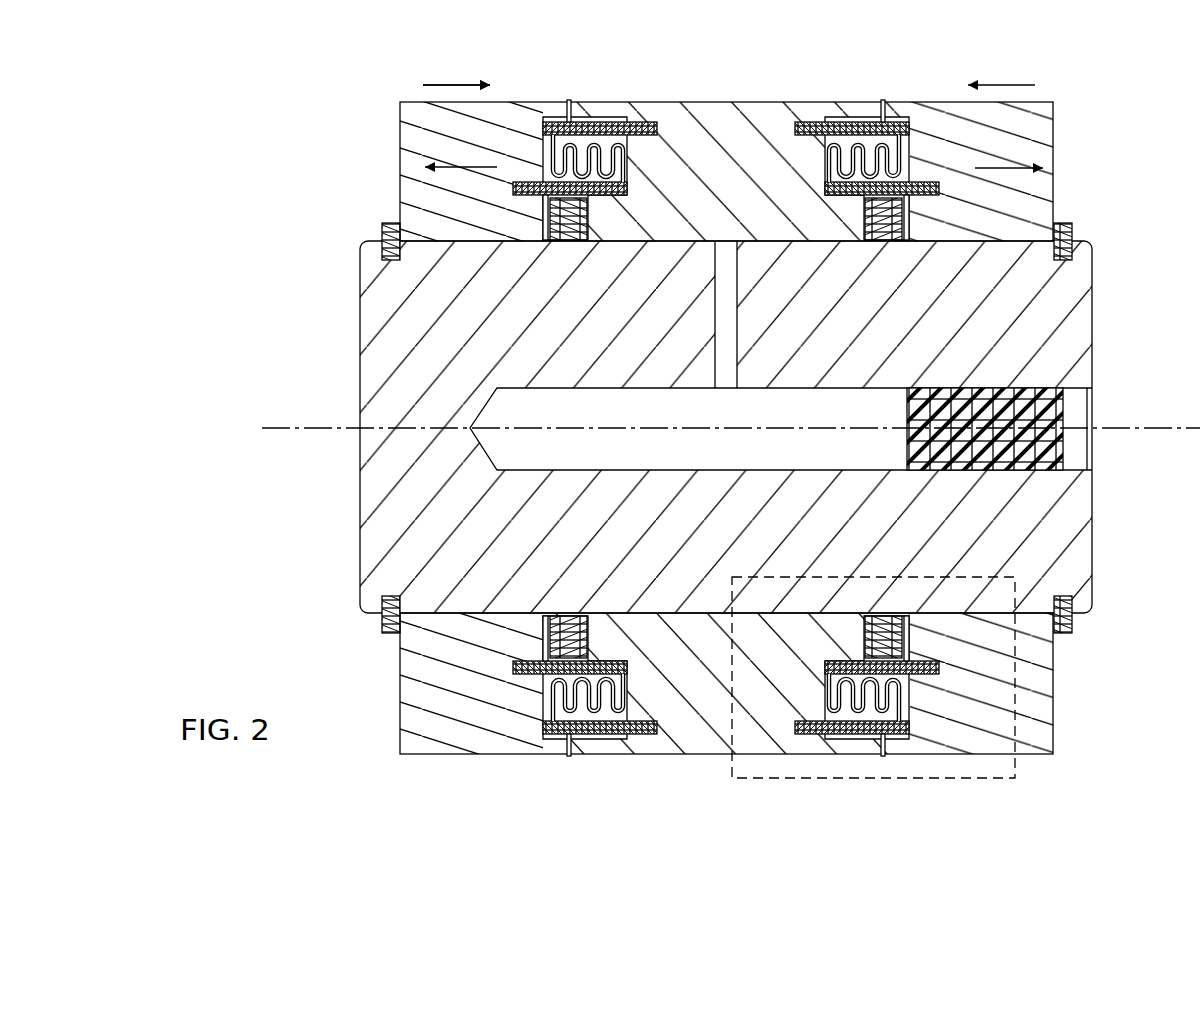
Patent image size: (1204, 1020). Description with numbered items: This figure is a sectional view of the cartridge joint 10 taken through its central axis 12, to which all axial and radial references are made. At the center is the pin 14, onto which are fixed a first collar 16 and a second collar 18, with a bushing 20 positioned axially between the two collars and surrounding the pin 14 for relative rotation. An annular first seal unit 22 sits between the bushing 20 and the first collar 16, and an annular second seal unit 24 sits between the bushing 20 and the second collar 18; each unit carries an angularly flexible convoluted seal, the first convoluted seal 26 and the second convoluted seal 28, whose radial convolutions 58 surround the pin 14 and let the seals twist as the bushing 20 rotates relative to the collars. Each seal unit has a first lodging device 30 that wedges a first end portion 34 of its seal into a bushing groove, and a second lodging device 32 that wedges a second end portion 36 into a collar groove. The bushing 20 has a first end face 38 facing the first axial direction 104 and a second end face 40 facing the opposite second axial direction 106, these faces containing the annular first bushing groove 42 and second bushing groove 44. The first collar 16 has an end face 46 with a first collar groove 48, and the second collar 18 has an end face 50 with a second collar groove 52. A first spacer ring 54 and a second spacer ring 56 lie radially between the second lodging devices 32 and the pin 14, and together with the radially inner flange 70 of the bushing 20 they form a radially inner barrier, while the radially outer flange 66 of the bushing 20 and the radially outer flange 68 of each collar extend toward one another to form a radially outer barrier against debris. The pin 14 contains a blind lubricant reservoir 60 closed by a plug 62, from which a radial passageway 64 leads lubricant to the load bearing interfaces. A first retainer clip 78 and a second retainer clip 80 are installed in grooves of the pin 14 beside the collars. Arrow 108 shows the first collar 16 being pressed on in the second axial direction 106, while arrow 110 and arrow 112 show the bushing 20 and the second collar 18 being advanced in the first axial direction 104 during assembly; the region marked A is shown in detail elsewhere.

The cartridge joint 10 is at (290, 79).
The central axis 12 is at (272, 432).
The pin 14 is at (372, 543).
The first collar 16 is at (1050, 146).
The second collar 18 is at (408, 148).
The bushing 20 is at (702, 140).
The first seal unit 22 is at (948, 720).
The second seal unit 24 is at (503, 720).
The first convoluted seal 26 is at (909, 142).
The second convoluted seal 28 is at (543, 142).
The first lodging device 30 is at (613, 756).
The second lodging device 32 is at (605, 658).
The first end portion 34 is at (678, 756).
The second end portion 36 is at (480, 615).
The first end face 38 is at (812, 148).
The second end face 40 is at (640, 148).
The first bushing groove 42 is at (827, 712).
The second bushing groove 44 is at (626, 712).
The end face 46 is at (905, 238).
The first collar groove 48 is at (935, 195).
The end face 50 is at (552, 235).
The second collar groove 52 is at (540, 190).
The first spacer ring 54 is at (882, 225).
The second spacer ring 56 is at (570, 225).
The radial convolutions 58 is at (626, 150).
The lubricant reservoir 60 is at (552, 388).
The plug 62 is at (1058, 447).
The radial passageway 64 is at (718, 360).
The radially outer flange 66 is at (602, 122).
The radially outer flange 68 is at (570, 100).
The radially inner flange 70 is at (585, 622).
The first retainer clip 78 is at (1070, 228).
The second retainer clip 80 is at (386, 228).
The first axial direction 104 is at (1013, 166).
The second axial direction 106 is at (453, 166).
The arrow 108 is at (1000, 84).
The arrow 110 is at (456, 84).
The arrow 112 is at (440, 62).
The detail region A is at (1016, 700).